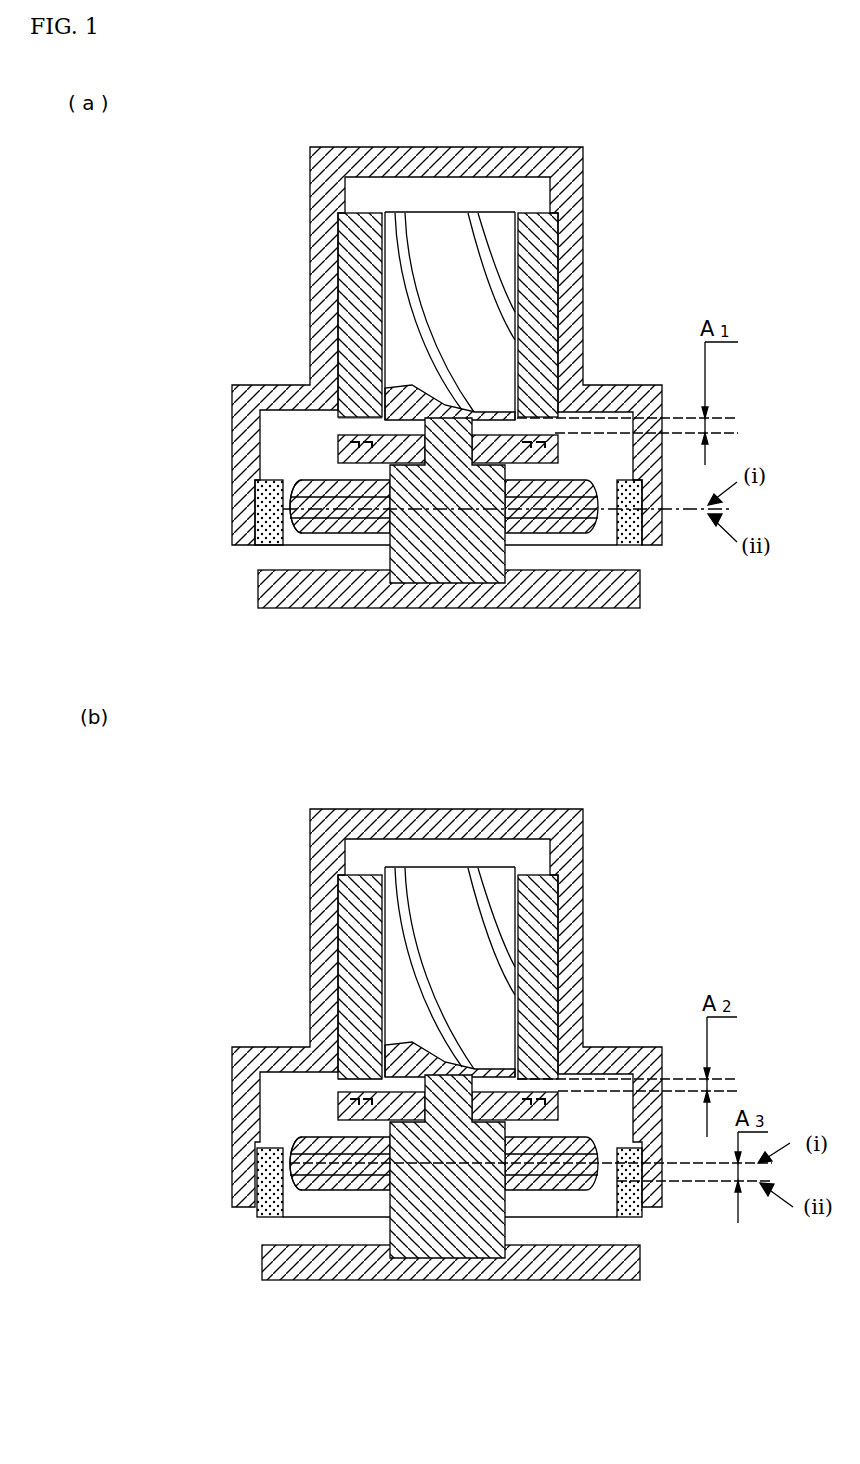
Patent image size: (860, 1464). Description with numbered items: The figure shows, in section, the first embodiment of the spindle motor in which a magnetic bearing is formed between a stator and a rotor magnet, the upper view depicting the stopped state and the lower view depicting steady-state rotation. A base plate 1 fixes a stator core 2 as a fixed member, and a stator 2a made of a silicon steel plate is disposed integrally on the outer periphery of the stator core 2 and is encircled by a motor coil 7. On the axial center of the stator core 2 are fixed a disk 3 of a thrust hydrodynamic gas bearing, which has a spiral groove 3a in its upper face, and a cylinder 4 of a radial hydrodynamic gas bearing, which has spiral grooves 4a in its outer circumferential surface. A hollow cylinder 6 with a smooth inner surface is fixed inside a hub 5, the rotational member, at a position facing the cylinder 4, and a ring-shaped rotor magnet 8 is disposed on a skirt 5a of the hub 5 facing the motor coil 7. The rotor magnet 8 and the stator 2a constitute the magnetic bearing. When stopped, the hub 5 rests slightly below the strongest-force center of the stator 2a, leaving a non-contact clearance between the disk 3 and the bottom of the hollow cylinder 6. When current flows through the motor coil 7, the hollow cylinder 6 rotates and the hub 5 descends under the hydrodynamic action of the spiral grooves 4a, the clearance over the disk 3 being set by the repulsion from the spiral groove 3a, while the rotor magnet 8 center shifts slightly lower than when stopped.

The base plate 1 is at (392, 608).
The stator core 2 is at (488, 572).
The stator 2a is at (300, 522).
The disk 3 is at (556, 454).
The spiral groove 3a is at (338, 433).
The cylinder 4 is at (441, 228).
The spiral grooves 4a is at (485, 268).
The hub 5 is at (318, 205).
The skirt 5a is at (235, 545).
The hollow cylinder 6 is at (355, 233).
The motor coil 7 is at (350, 478).
The rotor magnet 8 is at (256, 508).